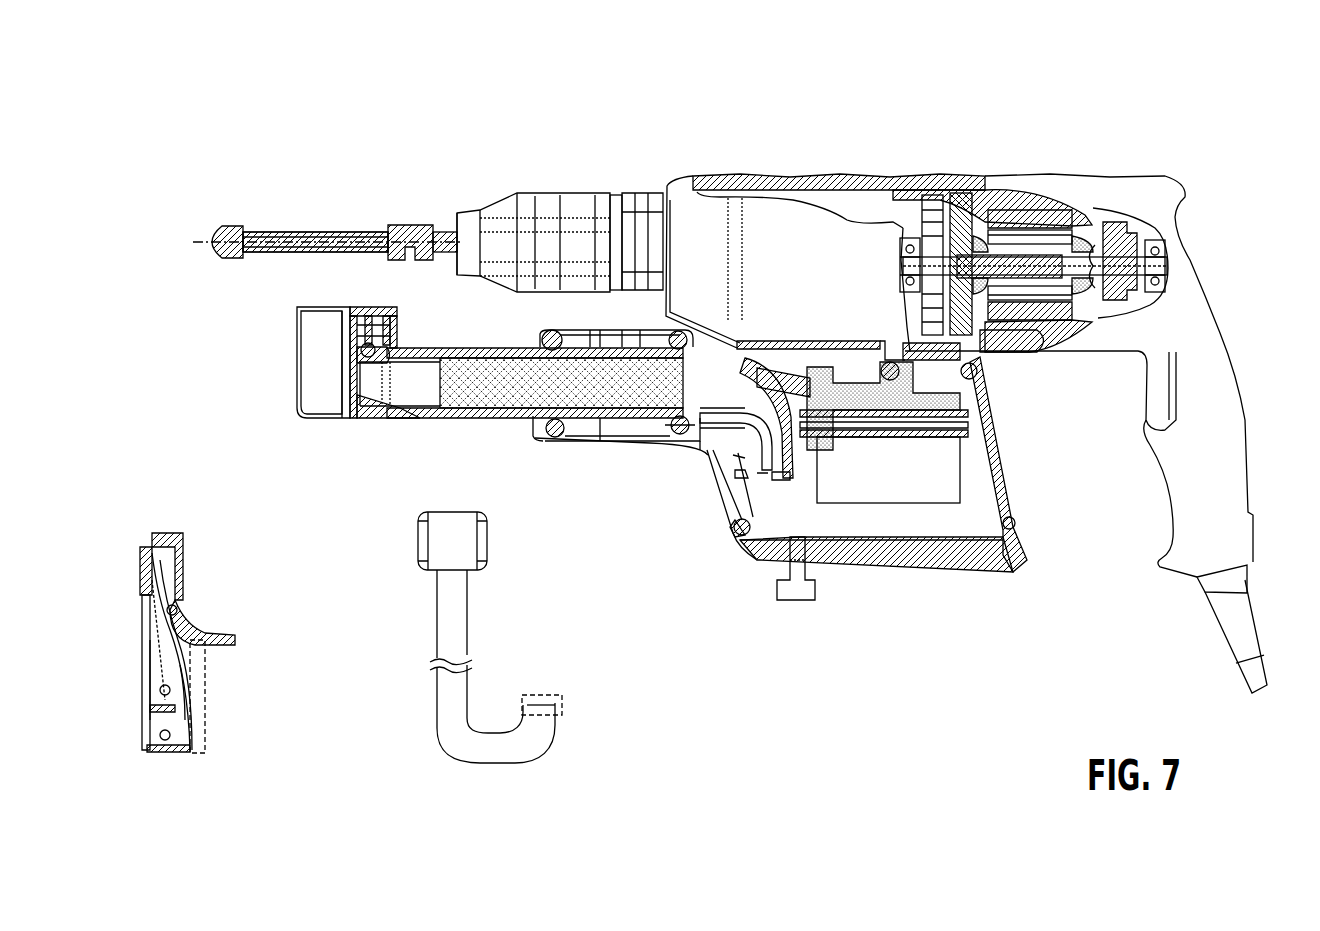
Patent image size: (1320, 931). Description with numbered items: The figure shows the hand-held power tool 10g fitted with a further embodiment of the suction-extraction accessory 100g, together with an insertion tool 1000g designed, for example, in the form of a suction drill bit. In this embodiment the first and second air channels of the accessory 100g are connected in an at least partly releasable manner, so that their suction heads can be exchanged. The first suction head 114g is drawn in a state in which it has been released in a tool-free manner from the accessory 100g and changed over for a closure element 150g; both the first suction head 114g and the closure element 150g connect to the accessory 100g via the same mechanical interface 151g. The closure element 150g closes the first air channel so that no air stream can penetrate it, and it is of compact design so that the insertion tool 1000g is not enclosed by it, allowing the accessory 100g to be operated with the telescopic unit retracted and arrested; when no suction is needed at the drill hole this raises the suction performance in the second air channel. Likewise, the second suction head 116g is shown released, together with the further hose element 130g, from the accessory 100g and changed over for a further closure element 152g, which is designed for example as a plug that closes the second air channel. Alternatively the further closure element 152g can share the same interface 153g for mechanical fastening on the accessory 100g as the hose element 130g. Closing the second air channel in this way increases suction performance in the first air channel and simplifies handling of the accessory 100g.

The insertion tool 1000g is at (358, 225).
The hand-held power tool 10g is at (1192, 216).
The accessory 100g is at (964, 599).
The first suction head 114g is at (148, 533).
The second suction head 116g is at (497, 547).
The hose element 130g is at (458, 630).
The closure element 150g is at (313, 427).
The mechanical interface 151g is at (350, 425).
The further closure element 152g is at (790, 600).
The interface 153g is at (565, 705).